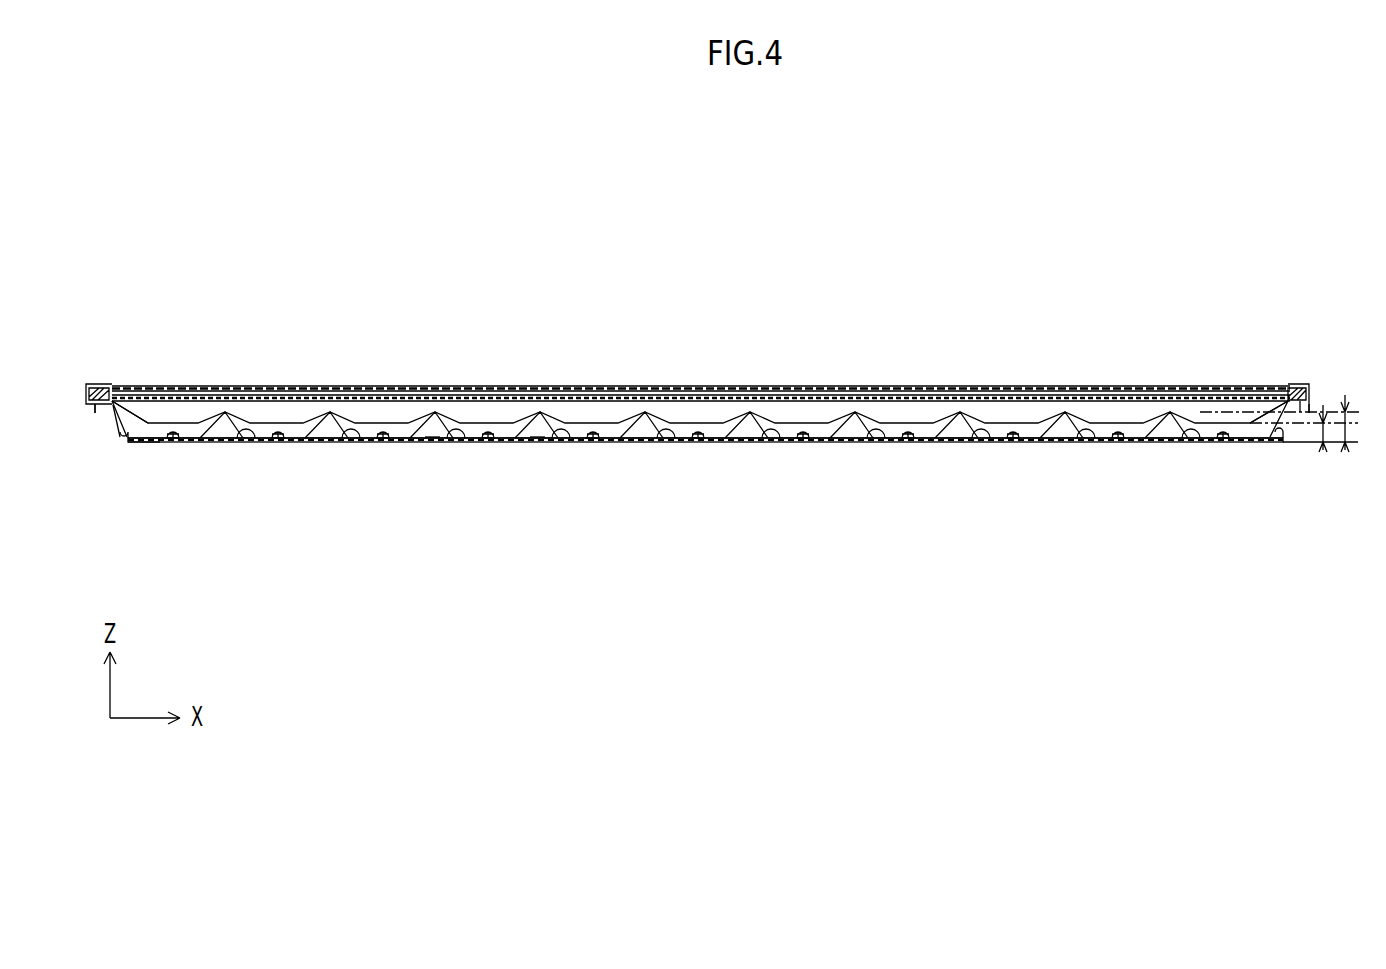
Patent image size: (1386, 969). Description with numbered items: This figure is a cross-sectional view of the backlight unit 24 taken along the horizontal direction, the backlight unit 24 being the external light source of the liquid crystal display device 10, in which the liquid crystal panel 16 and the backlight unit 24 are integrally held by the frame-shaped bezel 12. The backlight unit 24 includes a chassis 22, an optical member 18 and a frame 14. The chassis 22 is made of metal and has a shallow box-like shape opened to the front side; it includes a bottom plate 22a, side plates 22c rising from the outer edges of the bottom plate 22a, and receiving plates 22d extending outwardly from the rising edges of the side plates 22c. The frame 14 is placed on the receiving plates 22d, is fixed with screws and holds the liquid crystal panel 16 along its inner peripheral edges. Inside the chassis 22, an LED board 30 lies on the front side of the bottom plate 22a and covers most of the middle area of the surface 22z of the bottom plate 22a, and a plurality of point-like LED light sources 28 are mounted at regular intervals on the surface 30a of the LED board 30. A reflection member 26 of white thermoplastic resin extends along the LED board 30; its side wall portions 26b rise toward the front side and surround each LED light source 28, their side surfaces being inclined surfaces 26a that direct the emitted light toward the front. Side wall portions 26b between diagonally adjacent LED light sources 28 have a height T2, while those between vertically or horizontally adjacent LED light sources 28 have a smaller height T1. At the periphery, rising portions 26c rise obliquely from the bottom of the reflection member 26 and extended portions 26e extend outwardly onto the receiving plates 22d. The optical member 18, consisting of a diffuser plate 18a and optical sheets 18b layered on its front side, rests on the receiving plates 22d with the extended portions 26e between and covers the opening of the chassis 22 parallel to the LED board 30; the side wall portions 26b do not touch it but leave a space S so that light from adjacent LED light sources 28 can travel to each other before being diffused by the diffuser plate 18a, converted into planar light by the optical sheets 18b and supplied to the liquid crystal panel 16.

The liquid crystal display device 10 is at (877, 226).
The bezel 12 is at (106, 387).
The frame 14 is at (95, 385).
The liquid crystal panel 16 is at (620, 390).
The optical member 18 is at (885, 320).
The diffuser plate 18a is at (813, 391).
The optical sheets 18b is at (845, 398).
The chassis 22 is at (120, 440).
The bottom plate 22a is at (230, 443).
The side plates 22c is at (113, 442).
The receiving plates 22d is at (96, 425).
The surface of the bottom plate 22z is at (150, 440).
The backlight unit 24 is at (639, 560).
The reflection member 26 is at (1268, 397).
The inclined surfaces 26a is at (200, 440).
The side wall portions 26b is at (257, 440).
The rising portions 26c is at (140, 405).
The extended portions 26e is at (113, 401).
The LED light sources 28 is at (175, 431).
The LED board 30 is at (430, 442).
The surface of the LED board 30a is at (538, 442).
The space S is at (1145, 400).
The height T1 is at (1323, 432).
The height T2 is at (1345, 424).